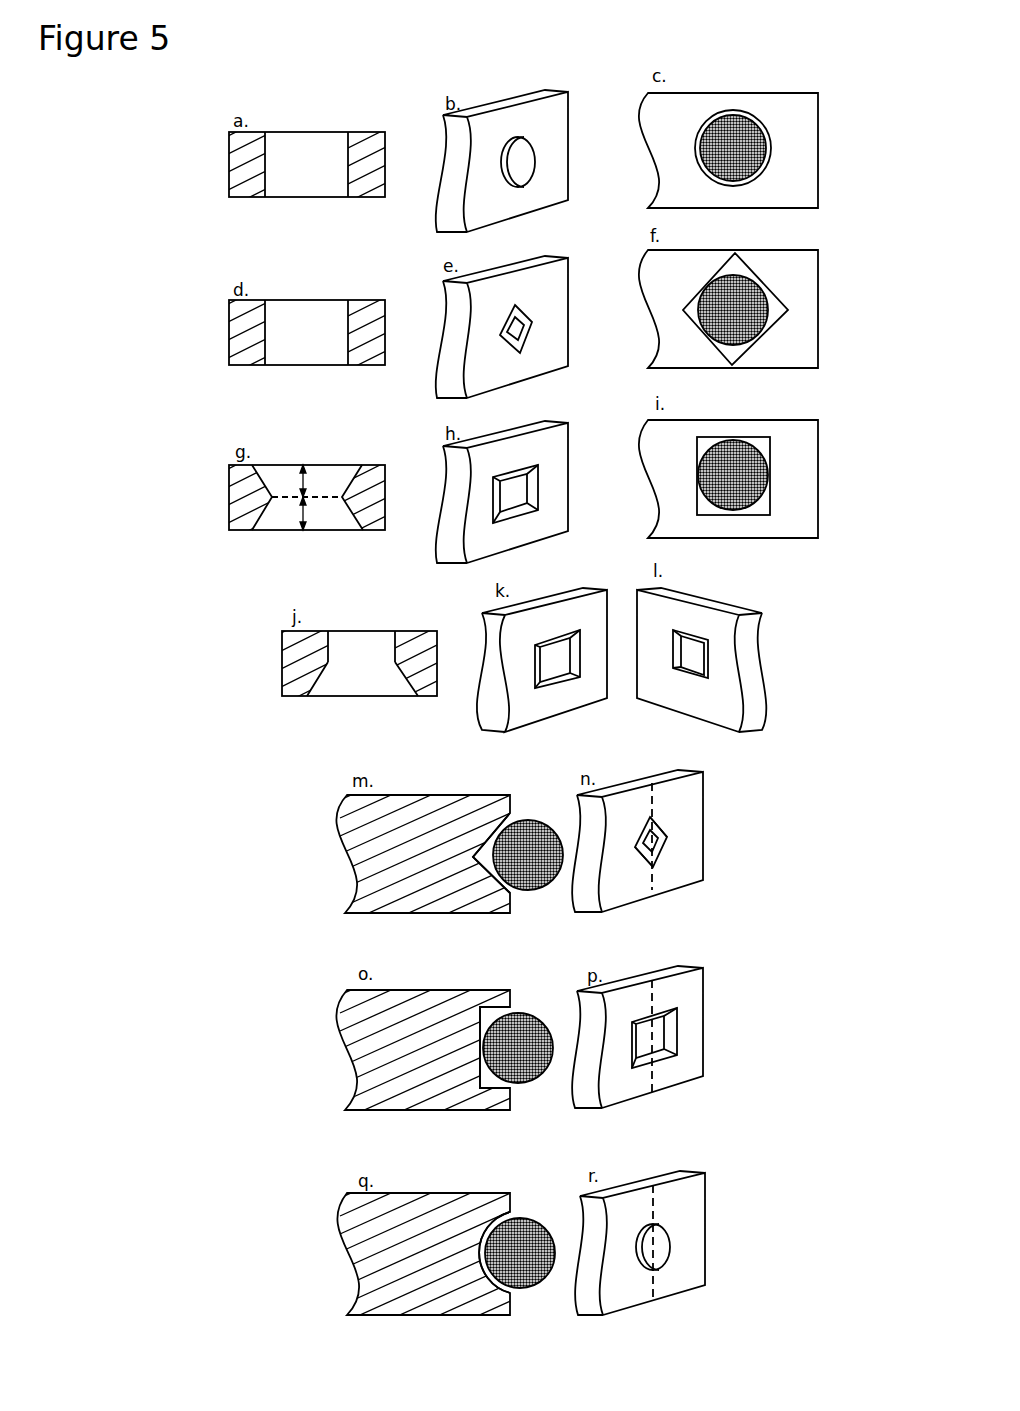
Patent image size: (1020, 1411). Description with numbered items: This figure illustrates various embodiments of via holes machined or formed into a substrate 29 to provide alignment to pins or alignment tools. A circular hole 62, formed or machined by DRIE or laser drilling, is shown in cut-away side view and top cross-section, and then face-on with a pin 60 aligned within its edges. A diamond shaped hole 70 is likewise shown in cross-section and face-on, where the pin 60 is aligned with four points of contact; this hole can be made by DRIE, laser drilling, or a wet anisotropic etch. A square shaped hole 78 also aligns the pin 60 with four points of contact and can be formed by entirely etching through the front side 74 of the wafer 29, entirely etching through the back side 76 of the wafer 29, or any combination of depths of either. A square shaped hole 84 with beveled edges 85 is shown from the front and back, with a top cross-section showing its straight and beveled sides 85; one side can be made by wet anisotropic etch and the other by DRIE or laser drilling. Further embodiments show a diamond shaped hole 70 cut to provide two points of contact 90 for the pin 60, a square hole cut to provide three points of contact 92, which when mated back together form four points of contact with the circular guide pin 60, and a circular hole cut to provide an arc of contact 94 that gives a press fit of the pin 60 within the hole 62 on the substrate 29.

The substrate 29 is at (492, 725).
The circular hole 62 is at (511, 691).
The pin 60 is at (627, 699).
The diamond shaped hole 70 is at (526, 560).
The square shaped hole 78 is at (480, 752).
The front side of the wafer 74 is at (319, 481).
The back side of the wafer 76 is at (319, 513).
The square shaped hole with beveled edges 84 is at (518, 688).
The beveled edges 85 is at (427, 715).
The two points of contact 90 is at (615, 858).
The three points of contact 92 is at (466, 1059).
The arc of contact 94 is at (510, 1230).